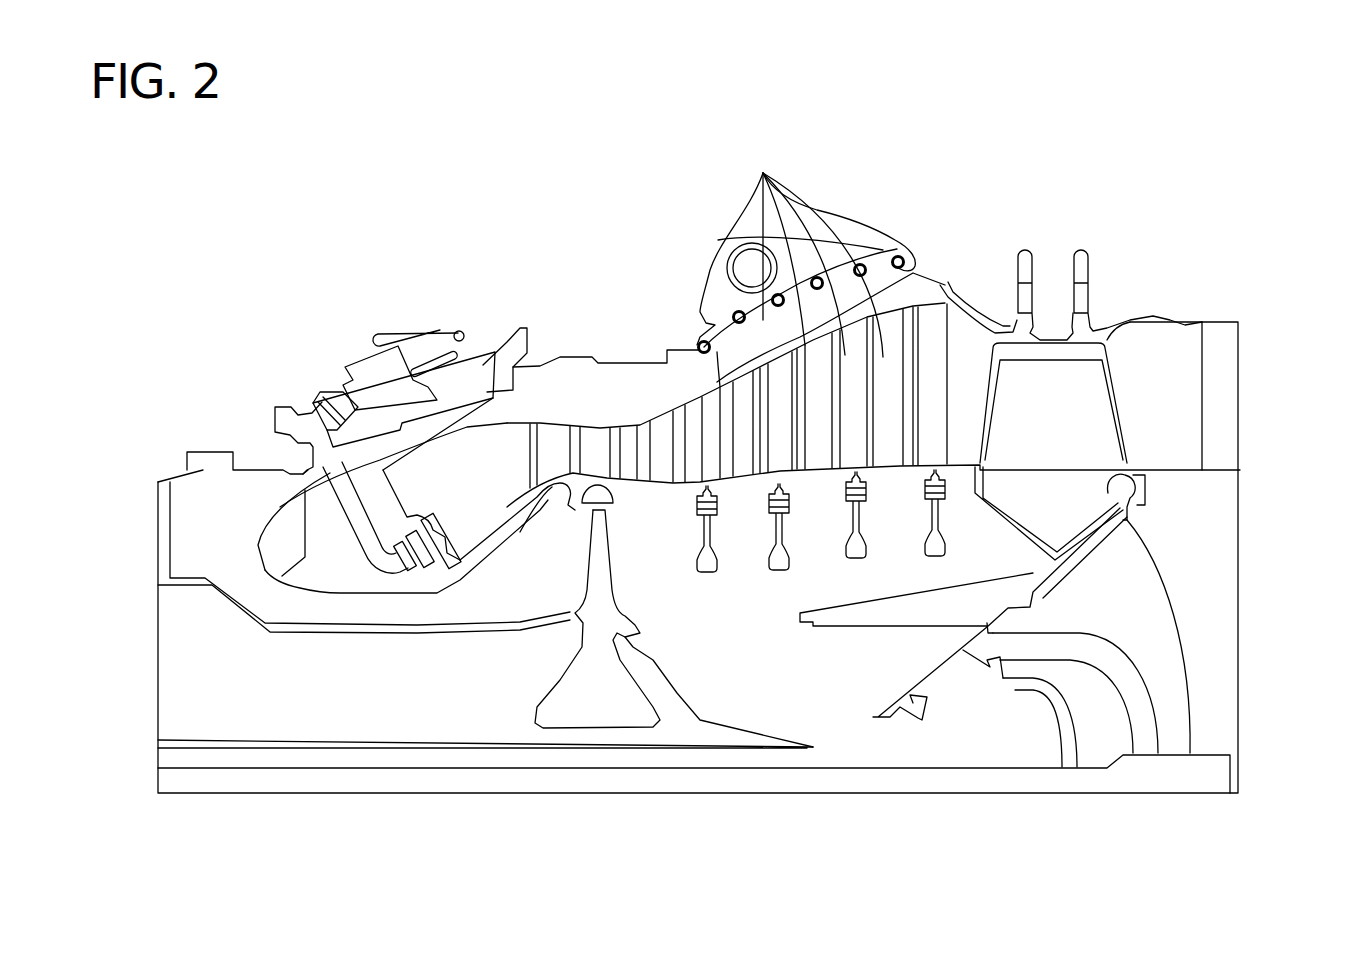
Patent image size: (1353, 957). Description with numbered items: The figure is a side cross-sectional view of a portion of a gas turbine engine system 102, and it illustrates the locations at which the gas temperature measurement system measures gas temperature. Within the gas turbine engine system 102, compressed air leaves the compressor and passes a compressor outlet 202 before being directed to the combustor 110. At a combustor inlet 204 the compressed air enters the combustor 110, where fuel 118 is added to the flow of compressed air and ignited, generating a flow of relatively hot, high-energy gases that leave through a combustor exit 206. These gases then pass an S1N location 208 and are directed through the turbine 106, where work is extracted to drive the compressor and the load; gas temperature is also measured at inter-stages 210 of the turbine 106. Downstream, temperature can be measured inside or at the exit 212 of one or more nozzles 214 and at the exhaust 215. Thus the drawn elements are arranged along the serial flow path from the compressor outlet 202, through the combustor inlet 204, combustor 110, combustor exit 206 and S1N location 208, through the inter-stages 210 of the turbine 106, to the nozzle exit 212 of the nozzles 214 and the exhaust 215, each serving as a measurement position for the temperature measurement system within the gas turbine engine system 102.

The gas turbine engine system 102 is at (603, 252).
The turbine 106 is at (919, 243).
The combustor 110 is at (478, 455).
The fuel 118 is at (367, 380).
The compressor outlet 202 is at (163, 535).
The combustor inlet 204 is at (303, 557).
The combustor exit 206 is at (530, 455).
The S1N location 208 is at (588, 462).
The inter-stages 210 is at (763, 173).
The exit of nozzle 212 is at (1202, 340).
The nozzle 214 is at (1225, 372).
The exhaust 215 is at (1250, 418).